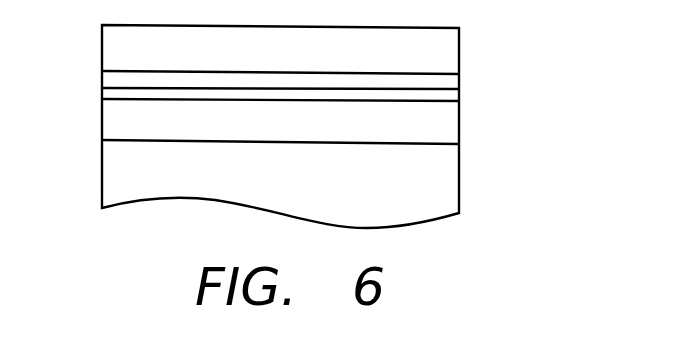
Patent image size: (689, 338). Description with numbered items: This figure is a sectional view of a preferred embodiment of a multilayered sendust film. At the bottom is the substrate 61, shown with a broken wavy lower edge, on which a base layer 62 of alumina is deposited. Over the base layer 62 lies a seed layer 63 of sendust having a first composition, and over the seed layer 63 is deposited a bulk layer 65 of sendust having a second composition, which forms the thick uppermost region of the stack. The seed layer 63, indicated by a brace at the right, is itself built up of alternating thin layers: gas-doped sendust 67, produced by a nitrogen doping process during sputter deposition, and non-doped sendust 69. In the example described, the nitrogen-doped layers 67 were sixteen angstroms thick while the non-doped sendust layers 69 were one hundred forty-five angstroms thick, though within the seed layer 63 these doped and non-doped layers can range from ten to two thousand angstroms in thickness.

The substrate 61 is at (452, 187).
The base layer 62 is at (452, 122).
The seed layer 63 is at (464, 73).
The bulk layer 65 is at (452, 48).
The gas-doped sendust layer 67 is at (102, 94).
The sendust layer 69 is at (102, 79).